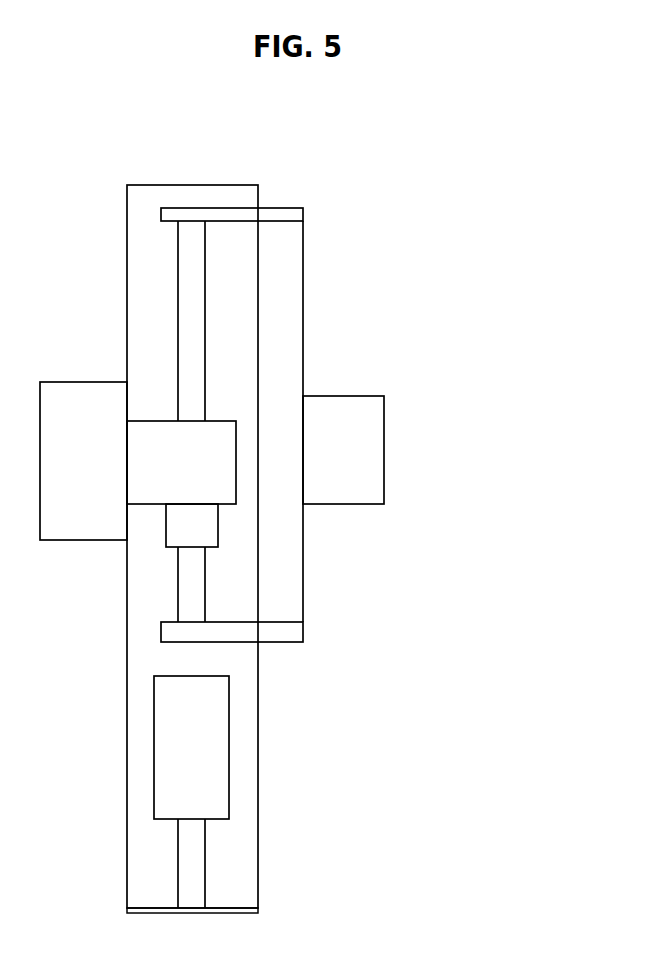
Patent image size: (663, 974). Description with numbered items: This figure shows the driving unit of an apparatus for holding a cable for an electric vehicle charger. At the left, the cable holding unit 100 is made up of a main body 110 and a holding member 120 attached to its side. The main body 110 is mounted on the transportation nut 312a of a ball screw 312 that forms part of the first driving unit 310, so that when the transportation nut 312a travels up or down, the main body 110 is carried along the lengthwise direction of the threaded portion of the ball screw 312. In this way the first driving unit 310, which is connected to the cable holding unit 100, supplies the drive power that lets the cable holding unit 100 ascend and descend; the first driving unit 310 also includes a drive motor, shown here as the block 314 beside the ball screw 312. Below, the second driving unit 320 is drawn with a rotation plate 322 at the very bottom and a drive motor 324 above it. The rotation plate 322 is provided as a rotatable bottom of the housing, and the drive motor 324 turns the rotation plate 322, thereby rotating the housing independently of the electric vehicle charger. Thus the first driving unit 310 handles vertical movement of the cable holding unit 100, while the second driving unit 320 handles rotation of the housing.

The cable holding unit 100 is at (122, 393).
The main body 110 is at (162, 425).
The holding member 120 is at (80, 395).
The first driving unit 310 is at (371, 425).
The ball screw 312 is at (198, 289).
The transportation nut 312a is at (338, 525).
The driving motor 314 is at (370, 417).
The second driving unit 320 is at (296, 799).
The rotation plate 322 is at (240, 912).
The drive motor 324 is at (217, 796).